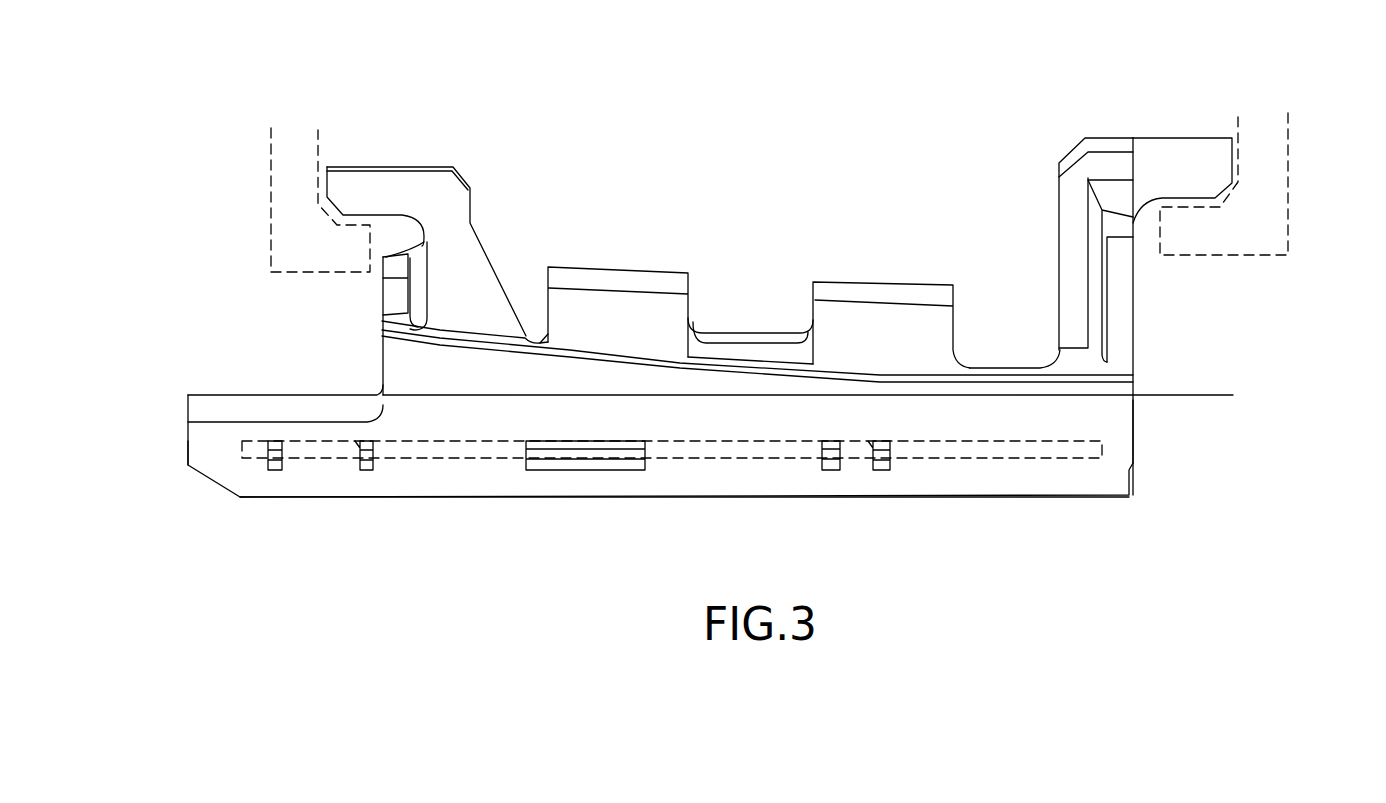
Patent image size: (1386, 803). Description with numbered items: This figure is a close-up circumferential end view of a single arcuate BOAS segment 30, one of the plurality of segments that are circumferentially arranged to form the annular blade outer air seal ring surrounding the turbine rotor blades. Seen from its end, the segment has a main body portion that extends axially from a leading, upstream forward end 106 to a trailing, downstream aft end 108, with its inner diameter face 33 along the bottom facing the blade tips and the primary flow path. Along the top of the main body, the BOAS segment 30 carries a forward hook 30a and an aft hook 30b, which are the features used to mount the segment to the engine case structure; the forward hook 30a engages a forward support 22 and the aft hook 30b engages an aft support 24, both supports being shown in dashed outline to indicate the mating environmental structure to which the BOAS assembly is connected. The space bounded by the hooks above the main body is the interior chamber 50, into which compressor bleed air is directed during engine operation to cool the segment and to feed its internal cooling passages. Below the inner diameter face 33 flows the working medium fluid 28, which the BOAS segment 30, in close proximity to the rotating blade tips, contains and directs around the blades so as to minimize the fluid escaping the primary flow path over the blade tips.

The support 22 is at (290, 153).
The support 24 is at (1288, 177).
The working medium fluid 28 is at (385, 587).
The BOAS segment 30 is at (827, 143).
The forward hook 30a is at (388, 167).
The aft hook 30b is at (1170, 138).
The inner diameter face 33 is at (602, 497).
The interior chamber 50 is at (798, 228).
The forward end 106 is at (188, 441).
The aft end 108 is at (1133, 423).